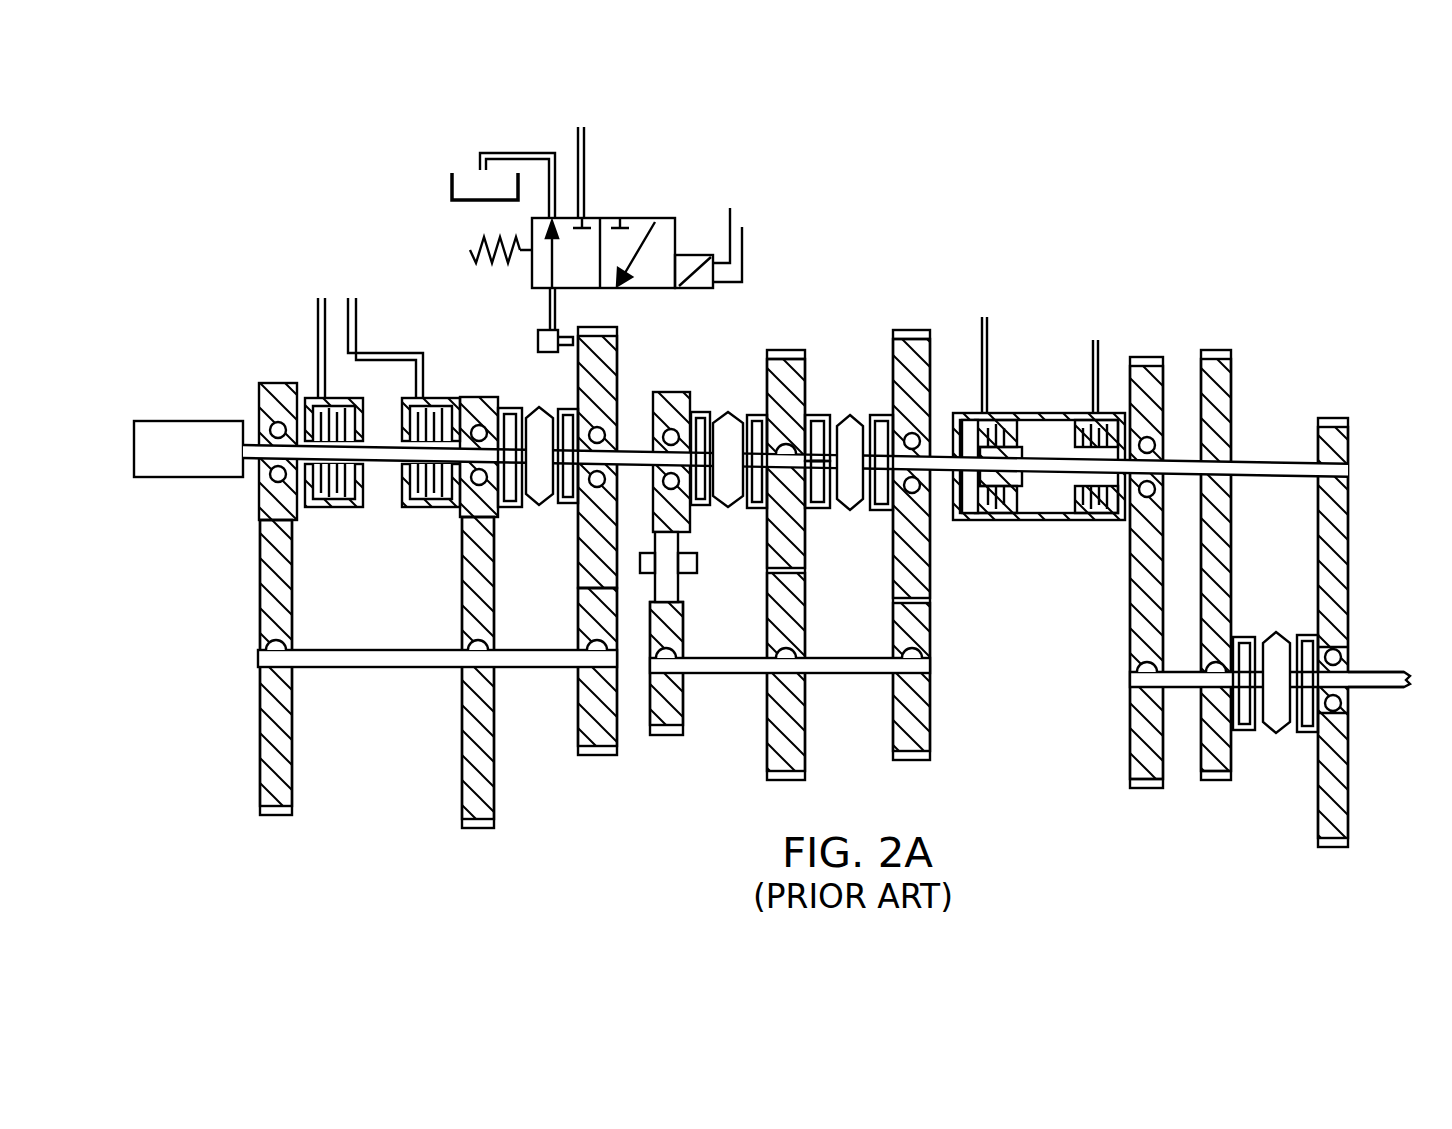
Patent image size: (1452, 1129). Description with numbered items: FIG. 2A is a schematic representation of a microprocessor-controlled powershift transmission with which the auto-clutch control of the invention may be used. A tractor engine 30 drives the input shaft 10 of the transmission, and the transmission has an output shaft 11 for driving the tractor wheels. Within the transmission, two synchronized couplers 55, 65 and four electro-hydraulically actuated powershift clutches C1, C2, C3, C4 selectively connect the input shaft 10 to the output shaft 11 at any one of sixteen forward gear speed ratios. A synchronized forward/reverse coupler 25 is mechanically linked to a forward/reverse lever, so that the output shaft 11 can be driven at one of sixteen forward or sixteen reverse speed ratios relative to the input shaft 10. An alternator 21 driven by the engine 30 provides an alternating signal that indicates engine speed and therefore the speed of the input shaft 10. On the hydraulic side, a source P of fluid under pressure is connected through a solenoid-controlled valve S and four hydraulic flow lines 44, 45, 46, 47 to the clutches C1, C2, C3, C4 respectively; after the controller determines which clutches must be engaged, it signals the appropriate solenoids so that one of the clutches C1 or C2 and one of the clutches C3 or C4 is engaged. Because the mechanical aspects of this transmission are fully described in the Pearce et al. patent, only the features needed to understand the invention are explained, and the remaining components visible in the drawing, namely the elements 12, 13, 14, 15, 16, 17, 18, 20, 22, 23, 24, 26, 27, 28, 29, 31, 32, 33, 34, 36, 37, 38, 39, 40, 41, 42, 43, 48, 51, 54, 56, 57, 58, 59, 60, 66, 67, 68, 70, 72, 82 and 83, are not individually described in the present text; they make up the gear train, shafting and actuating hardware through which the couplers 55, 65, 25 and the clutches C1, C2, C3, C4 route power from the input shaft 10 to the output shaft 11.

The input shaft 10 is at (248, 465).
The output shaft 11 is at (1372, 688).
The first countershaft 12 is at (335, 660).
The second countershaft 13 is at (703, 670).
The output shaft 14 is at (1180, 690).
The shift fork 15 is at (533, 380).
The synchronizer hub 16 is at (502, 408).
The synchronizer hub 17 is at (566, 505).
The synchronizer sleeve 18 is at (540, 507).
The gear 20 is at (617, 735).
The alternator 21 is at (1350, 444).
The intermediate shaft 22 is at (623, 448).
The hub 23 is at (812, 510).
The gear 24 is at (930, 735).
The synchronized forward/reverse coupler 25 is at (738, 400).
The bearing 26 is at (462, 400).
The hub 27 is at (760, 510).
The synchronizer sleeve 28 is at (728, 508).
The hub 29 is at (700, 412).
The tractor engine 30 is at (170, 478).
The shaft 31 is at (940, 455).
The shaft 32 is at (1047, 412).
The bearing 33 is at (658, 392).
The bearing 34 is at (262, 398).
The gear 36 is at (790, 352).
The gear 37 is at (1130, 545).
The gear 38 is at (684, 735).
The gear 39 is at (1231, 760).
The gear 40 is at (805, 740).
The gear 41 is at (1231, 392).
The gear 42 is at (292, 745).
The gear 43 is at (1130, 715).
The hydraulic flow line 44 is at (318, 330).
The hydraulic flow line 45 is at (352, 300).
The hydraulic flow line 46 is at (987, 340).
The hydraulic flow line 47 is at (1098, 362).
The gear 48 is at (494, 765).
The gear 51 is at (893, 345).
The control valve 54 is at (642, 288).
The synchronized coupler 55 is at (845, 320).
The gear hub 56 is at (822, 412).
The hub 57 is at (882, 512).
The synchronizer sleeve 58 is at (852, 512).
The gear 59 is at (1348, 780).
The clutch housing 60 is at (1058, 412).
The synchronized coupler 65 is at (1272, 552).
The hub 66 is at (1246, 637).
The hub 67 is at (1310, 636).
The synchronizer sleeve 68 is at (1277, 738).
The gear 70 is at (590, 770).
The hub 72 is at (678, 582).
The actuator 82 is at (540, 333).
The solenoid 83 is at (693, 258).
The powershift clutch C1 is at (345, 507).
The powershift clutch C2 is at (395, 507).
The powershift clutch C3 is at (1000, 525).
The powershift clutch C4 is at (1080, 525).
The source of hydraulic fluid under pressure P is at (596, 172).
The valve S is at (633, 218).